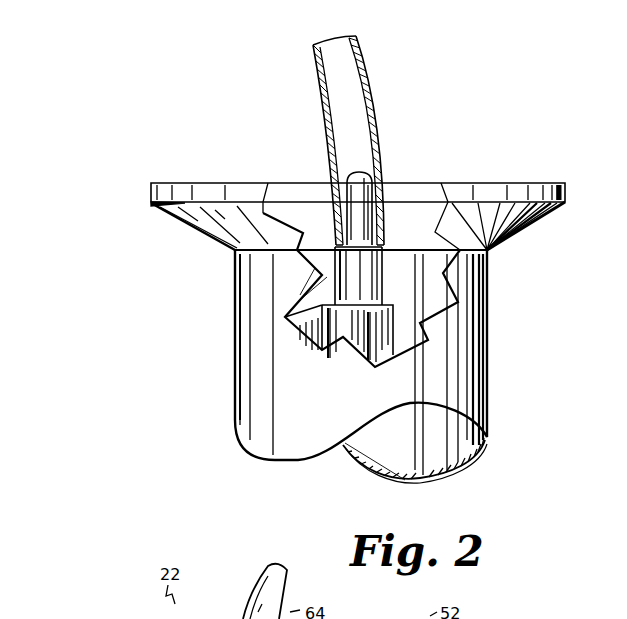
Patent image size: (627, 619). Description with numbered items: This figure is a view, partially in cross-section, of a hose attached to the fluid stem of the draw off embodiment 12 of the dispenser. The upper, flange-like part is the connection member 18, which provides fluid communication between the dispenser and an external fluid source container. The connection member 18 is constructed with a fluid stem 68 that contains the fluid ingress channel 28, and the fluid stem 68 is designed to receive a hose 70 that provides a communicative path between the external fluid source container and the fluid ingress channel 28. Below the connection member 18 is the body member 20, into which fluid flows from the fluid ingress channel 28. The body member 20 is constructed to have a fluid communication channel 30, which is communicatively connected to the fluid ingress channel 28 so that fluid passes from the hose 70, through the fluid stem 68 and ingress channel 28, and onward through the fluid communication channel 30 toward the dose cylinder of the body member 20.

The draw off embodiment 12 is at (528, 122).
The connection member 18 is at (234, 150).
The body member 20 is at (503, 365).
The fluid ingress channel 28 is at (370, 160).
The fluid communication channel 30 is at (382, 270).
The fluid stem 68 is at (340, 165).
The hose 70 is at (380, 97).